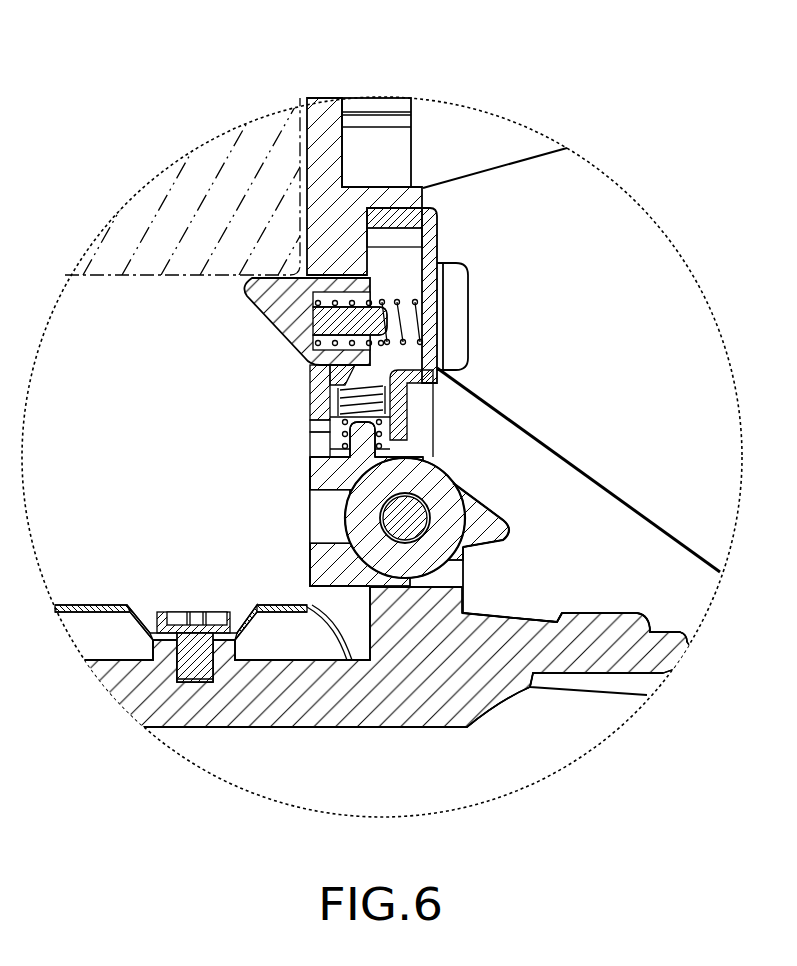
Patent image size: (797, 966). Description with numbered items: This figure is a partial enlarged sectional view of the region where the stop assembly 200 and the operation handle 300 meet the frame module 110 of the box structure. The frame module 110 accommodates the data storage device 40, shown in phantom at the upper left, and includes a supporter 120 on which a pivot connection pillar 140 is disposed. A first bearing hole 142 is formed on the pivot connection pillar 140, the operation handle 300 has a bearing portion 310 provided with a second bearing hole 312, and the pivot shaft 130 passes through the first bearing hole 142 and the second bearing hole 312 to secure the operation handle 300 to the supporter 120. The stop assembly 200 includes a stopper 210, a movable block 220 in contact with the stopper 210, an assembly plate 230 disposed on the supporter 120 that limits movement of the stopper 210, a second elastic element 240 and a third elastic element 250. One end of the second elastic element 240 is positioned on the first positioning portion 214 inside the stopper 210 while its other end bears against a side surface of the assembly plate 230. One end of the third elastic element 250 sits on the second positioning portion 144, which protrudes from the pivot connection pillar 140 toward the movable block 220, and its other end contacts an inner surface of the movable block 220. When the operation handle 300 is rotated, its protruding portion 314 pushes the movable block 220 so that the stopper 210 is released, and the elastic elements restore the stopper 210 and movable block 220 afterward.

The data storage device 40 is at (250, 152).
The frame module 110 is at (377, 115).
The supporter 120 is at (330, 110).
The pivot shaft 130 is at (445, 555).
The pivot connection pillar 140 is at (424, 487).
The first bearing hole 142 is at (430, 458).
The second positioning portion 144 is at (330, 448).
The stop assembly 200 is at (100, 372).
The stopper 210 is at (253, 293).
The first positioning portion 214 is at (365, 320).
The movable block 220 is at (345, 393).
The assembly plate 230 is at (427, 358).
The second elastic element 240 is at (443, 316).
The third elastic element 250 is at (340, 432).
The operation handle 300 is at (227, 713).
The bearing portion 310 is at (340, 563).
The second bearing hole 312 is at (372, 505).
The protruding portion 314 is at (495, 533).